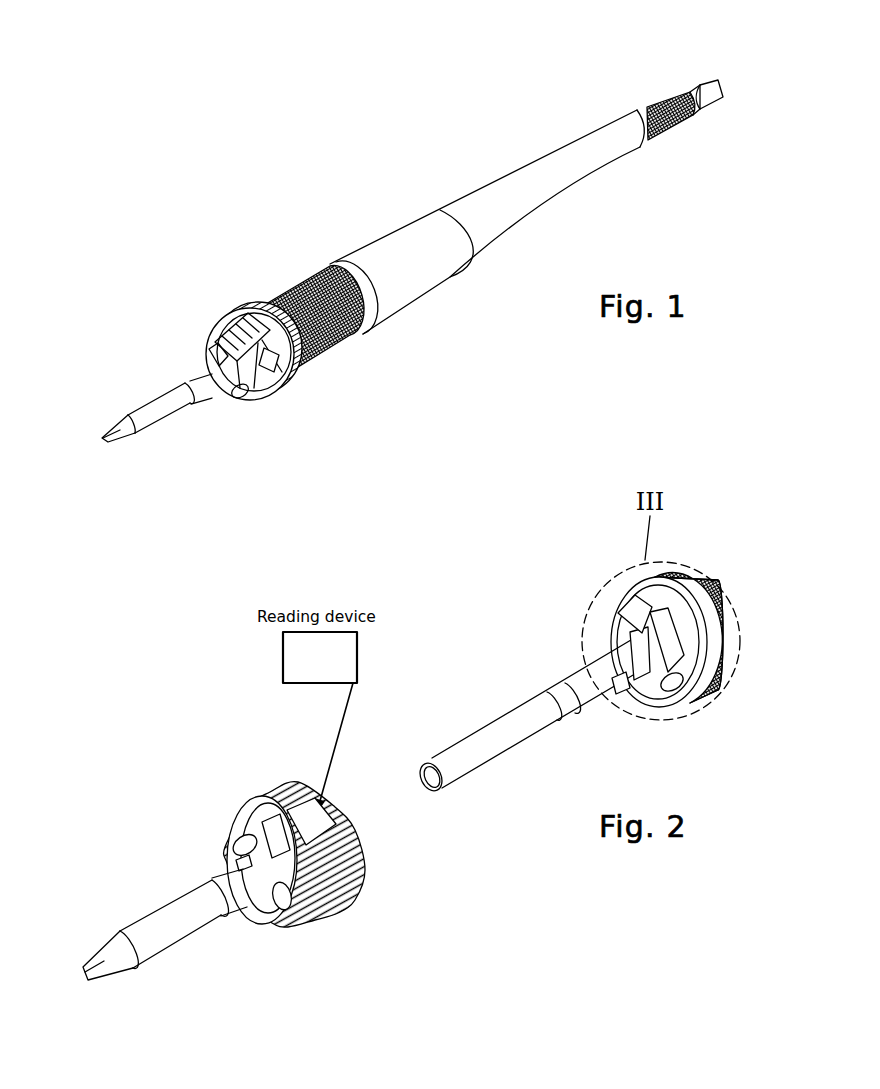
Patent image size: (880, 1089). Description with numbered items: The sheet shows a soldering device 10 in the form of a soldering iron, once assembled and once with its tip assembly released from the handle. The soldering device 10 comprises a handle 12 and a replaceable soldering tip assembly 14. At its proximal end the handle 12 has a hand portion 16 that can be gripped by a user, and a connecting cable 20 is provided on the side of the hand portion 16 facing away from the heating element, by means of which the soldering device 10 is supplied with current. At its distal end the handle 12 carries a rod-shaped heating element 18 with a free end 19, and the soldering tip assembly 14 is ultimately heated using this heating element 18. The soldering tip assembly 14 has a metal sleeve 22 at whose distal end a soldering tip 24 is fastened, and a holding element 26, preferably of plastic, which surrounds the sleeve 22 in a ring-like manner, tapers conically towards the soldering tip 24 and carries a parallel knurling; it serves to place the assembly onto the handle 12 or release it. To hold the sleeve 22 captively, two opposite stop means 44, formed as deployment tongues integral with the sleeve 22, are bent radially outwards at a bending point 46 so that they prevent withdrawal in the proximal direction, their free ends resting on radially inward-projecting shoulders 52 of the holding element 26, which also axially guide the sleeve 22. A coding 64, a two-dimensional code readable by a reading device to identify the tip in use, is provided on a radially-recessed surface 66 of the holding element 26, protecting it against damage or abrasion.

In FIG. 1, the soldering device 10 is at (254, 199).
In FIG. 1, the handle 12 is at (452, 306).
In FIG. 1, the soldering tip assembly 14 is at (205, 443).
In FIG. 2, the soldering tip assembly 14 is at (208, 978).
In FIG. 1, the hand portion 16 is at (378, 258).
In FIG. 2, the hand portion 16 is at (703, 582).
In FIG. 2, the heating element 18 is at (507, 723).
In FIG. 2, the free end 19 is at (423, 767).
In FIG. 1, the connecting cable 20 is at (706, 100).
In FIG. 2, the sleeve 22 is at (241, 910).
In FIG. 1, the soldering tip 24 is at (128, 414).
In FIG. 2, the soldering tip 24 is at (142, 928).
In FIG. 1, the holding element 26 is at (240, 316).
In FIG. 2, the holding element 26 is at (334, 916).
In FIG. 2, the stop means 44 is at (238, 842).
In FIG. 2, the bending point 46 is at (232, 858).
In FIG. 2, the shoulders 52 is at (262, 820).
In FIG. 1, the coding 64 is at (282, 394).
In FIG. 2, the coding 64 is at (300, 793).
In FIG. 1, the radially-recessed surface 66 is at (279, 368).